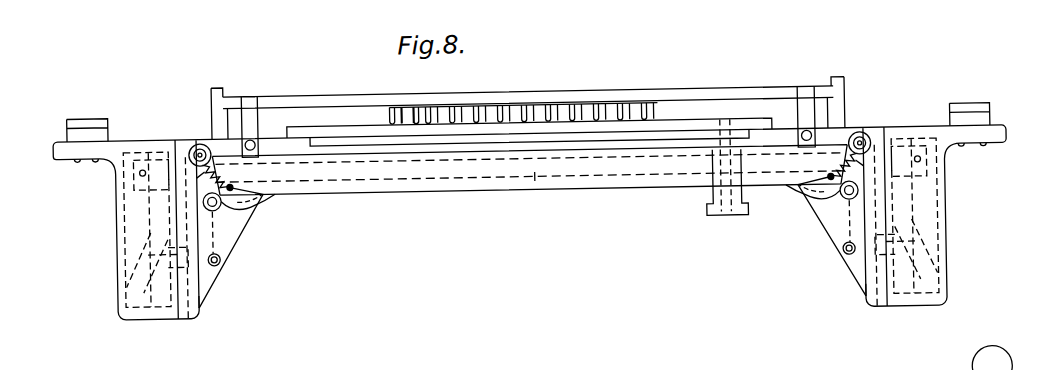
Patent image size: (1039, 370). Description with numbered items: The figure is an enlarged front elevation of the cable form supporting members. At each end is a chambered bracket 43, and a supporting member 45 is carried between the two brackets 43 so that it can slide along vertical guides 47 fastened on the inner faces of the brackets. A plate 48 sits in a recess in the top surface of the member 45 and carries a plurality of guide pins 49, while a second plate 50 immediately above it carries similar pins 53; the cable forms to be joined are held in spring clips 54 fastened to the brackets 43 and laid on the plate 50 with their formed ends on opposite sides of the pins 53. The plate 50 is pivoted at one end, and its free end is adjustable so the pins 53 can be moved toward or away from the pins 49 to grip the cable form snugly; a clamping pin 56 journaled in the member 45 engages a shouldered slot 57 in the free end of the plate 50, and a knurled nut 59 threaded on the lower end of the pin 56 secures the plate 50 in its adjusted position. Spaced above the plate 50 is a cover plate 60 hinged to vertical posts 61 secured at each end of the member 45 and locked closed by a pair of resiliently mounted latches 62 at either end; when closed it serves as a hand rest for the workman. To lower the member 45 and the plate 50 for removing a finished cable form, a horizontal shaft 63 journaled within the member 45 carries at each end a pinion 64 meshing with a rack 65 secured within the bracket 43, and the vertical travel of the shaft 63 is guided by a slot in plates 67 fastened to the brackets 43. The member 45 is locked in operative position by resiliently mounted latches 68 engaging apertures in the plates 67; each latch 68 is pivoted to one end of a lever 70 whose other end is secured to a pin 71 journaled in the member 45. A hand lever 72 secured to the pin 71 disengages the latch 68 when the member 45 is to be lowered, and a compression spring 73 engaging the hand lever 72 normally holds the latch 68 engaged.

The chambered bracket 43 is at (116, 226).
The supporting member 45 is at (477, 185).
The vertical guides 47 is at (201, 303).
The plate 48 is at (608, 138).
The guide pins 49 is at (421, 105).
The second plate 50 is at (386, 125).
The pins 53 is at (560, 105).
The spring clips 54 is at (91, 111).
The clamping pin 56 is at (721, 124).
The shouldered slot 57 is at (731, 124).
The knurled nut 59 is at (718, 217).
The cover plate 60 is at (320, 92).
The vertical posts 61 is at (251, 92).
The latches 62 is at (213, 101).
The horizontal shaft 63 is at (535, 178).
The pinion 64 is at (158, 196).
The rack 65 is at (133, 256).
The plates 67 is at (121, 286).
The latches 68 is at (218, 272).
The lever 70 is at (241, 230).
The pin 71 is at (222, 205).
The hand lever 72 is at (281, 193).
The compression spring 73 is at (231, 168).